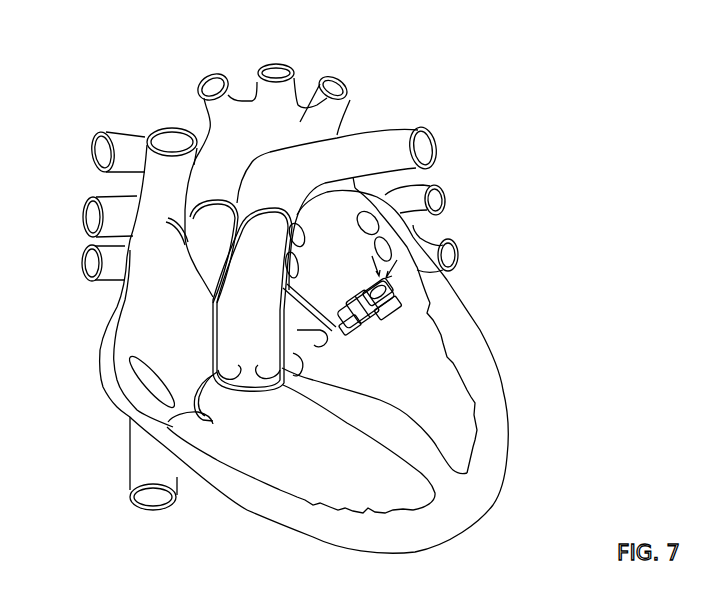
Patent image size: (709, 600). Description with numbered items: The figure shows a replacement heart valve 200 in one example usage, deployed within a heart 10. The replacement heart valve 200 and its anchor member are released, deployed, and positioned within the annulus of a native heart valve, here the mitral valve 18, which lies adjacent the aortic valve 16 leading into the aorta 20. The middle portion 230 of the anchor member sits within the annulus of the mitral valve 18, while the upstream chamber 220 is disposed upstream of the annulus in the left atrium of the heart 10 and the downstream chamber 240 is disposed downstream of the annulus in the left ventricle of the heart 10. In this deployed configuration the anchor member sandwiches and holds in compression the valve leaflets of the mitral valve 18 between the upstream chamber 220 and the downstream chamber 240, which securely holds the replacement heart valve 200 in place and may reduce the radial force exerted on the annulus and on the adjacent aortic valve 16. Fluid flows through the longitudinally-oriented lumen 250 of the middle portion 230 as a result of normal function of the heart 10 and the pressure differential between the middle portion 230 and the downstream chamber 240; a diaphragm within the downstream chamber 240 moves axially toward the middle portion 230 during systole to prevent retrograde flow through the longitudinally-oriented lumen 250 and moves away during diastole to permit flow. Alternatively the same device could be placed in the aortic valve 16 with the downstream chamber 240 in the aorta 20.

The heart 10 is at (503, 128).
The aortic valve 16 is at (315, 351).
The mitral valve 18 is at (352, 297).
The aorta 20 is at (293, 120).
The replacement heart valve 200 is at (441, 199).
The upstream chamber 220 is at (456, 252).
The middle portion 230 is at (383, 287).
The downstream chamber 240 is at (397, 293).
The longitudinally-oriented lumen 250 is at (382, 314).